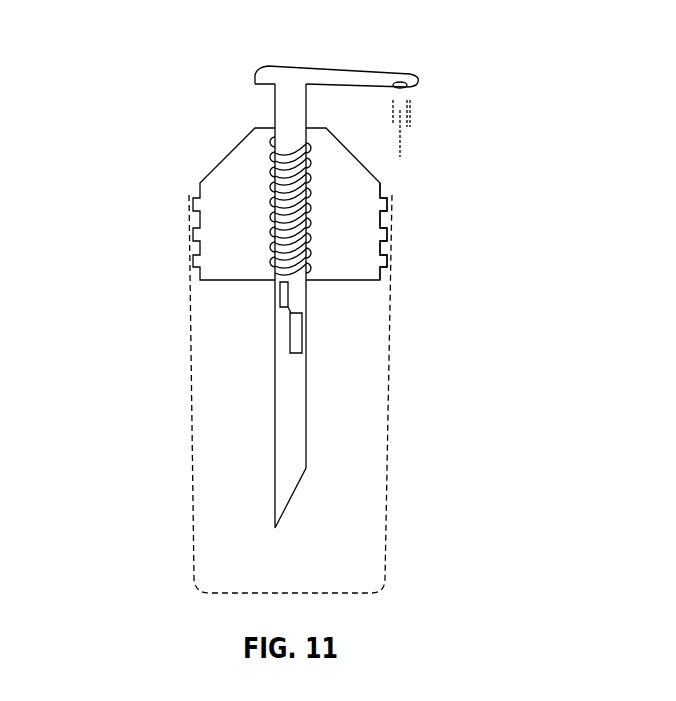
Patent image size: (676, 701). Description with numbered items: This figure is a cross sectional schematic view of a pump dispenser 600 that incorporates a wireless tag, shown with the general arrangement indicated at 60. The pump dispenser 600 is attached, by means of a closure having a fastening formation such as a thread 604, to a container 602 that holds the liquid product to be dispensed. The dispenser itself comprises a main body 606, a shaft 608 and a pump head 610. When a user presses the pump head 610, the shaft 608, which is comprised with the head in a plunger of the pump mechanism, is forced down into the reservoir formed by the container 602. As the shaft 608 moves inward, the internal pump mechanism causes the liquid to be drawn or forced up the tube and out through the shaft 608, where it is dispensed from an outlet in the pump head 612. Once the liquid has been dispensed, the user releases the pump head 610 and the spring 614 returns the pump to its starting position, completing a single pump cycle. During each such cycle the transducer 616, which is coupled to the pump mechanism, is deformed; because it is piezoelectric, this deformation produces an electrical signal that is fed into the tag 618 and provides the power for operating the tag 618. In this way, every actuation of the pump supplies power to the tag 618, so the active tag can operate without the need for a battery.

The body 60 is at (134, 313).
The pump dispenser 600 is at (475, 159).
The container 602 is at (385, 480).
The thread 604 is at (388, 233).
The main body 606 is at (220, 170).
The shaft 608 is at (275, 112).
The pump head 610 is at (353, 70).
The outlet in the pump head 612 is at (400, 88).
The spring 614 is at (267, 143).
The transducer 616 is at (288, 297).
The tag 618 is at (290, 333).